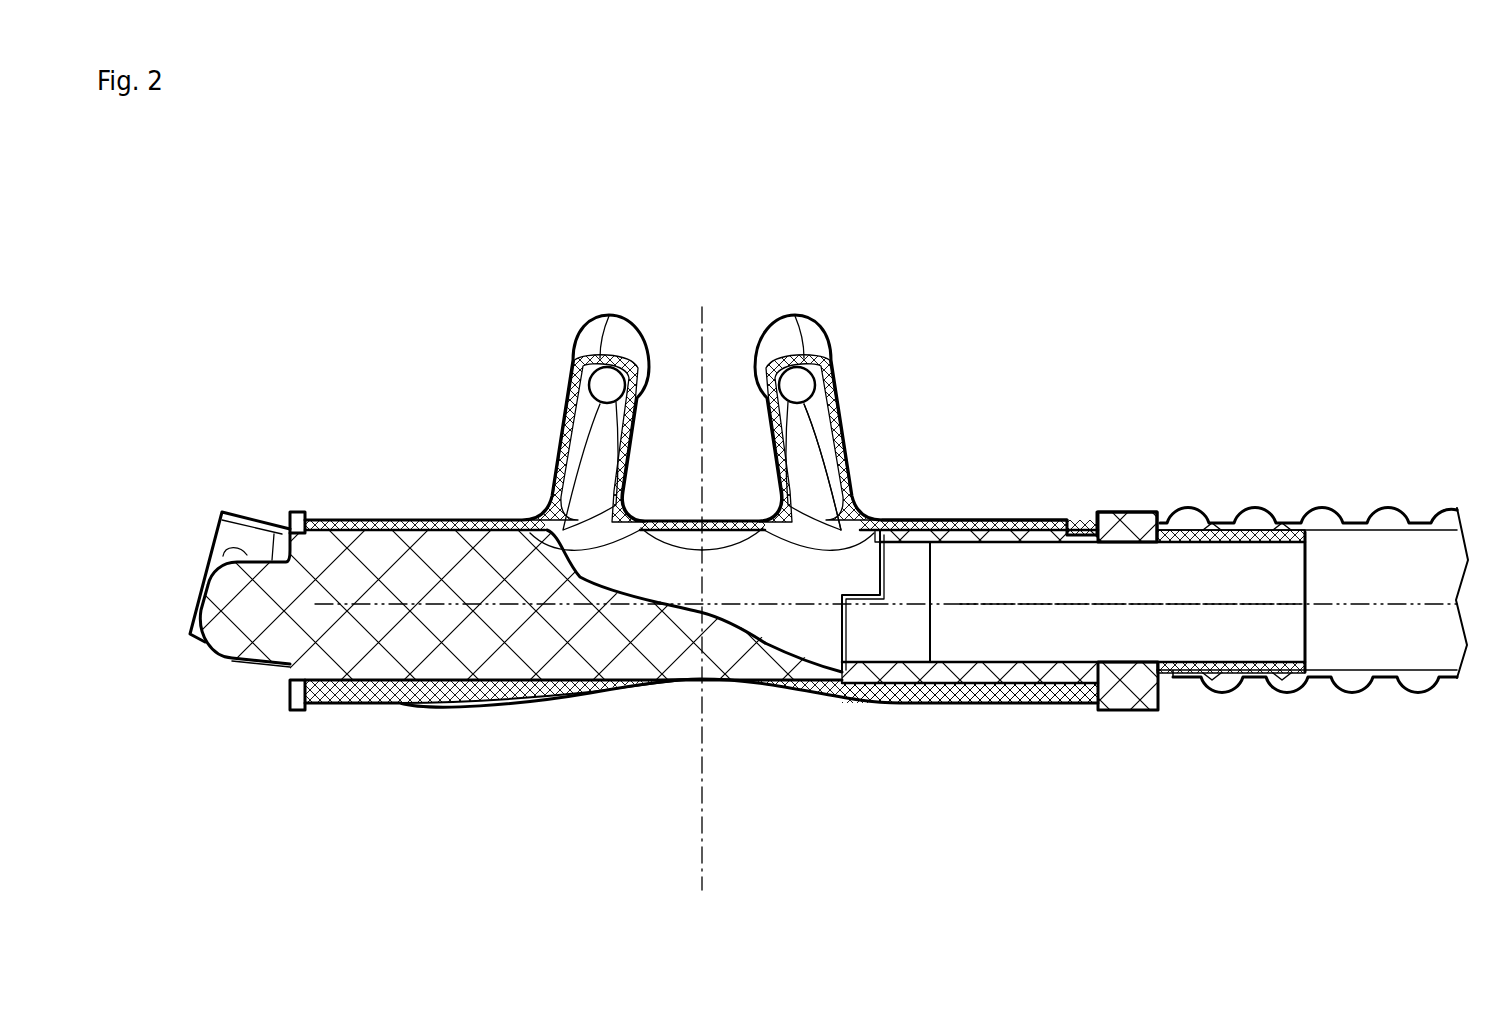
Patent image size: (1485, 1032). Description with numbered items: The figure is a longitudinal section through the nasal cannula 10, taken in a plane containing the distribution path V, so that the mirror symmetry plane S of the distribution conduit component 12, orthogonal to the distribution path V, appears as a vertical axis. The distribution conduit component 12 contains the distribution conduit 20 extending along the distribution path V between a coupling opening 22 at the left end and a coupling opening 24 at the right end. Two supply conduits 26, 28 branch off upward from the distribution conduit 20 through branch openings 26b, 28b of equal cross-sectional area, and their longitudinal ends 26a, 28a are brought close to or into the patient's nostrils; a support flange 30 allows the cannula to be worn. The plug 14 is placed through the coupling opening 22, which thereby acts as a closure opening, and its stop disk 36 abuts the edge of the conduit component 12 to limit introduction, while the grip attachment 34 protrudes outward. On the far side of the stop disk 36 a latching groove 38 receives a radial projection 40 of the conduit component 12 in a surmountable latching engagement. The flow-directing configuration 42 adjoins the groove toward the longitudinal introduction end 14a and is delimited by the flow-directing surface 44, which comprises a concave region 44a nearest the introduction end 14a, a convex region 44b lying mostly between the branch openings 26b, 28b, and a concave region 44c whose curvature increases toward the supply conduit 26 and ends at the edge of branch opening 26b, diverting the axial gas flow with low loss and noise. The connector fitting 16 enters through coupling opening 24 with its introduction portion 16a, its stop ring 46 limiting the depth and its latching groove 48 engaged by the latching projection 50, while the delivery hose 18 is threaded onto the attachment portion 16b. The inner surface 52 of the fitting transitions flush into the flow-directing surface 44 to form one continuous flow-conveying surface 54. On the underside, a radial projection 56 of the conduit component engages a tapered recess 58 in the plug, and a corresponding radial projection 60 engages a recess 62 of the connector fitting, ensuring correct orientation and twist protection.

The nasal cannula 10 is at (855, 534).
The distribution conduit component 12 is at (701, 775).
The plug 14 is at (682, 593).
The longitudinal introduction end 14a is at (836, 686).
The connector fitting 16 is at (1007, 637).
The introduction portion 16a is at (955, 505).
The attachment portion 16b is at (1220, 685).
The delivery hose 18 is at (1392, 706).
The distribution conduit 20 is at (731, 567).
The coupling opening 22 is at (305, 617).
The coupling opening 24 is at (1150, 700).
The supply conduit 26 is at (604, 388).
The longitudinal end 26a is at (629, 312).
The branch opening 26b is at (584, 505).
The supply conduit 28 is at (804, 388).
The longitudinal end 28a is at (768, 325).
The branch opening 28b is at (820, 507).
The support flange 30 is at (240, 594).
The grip attachment 34 is at (224, 630).
The stop disk 36 is at (300, 510).
The latching groove 38 is at (702, 474).
The radial projection 40 is at (330, 520).
The flow-directing configuration 42 is at (521, 584).
The flow-directing surface 44 is at (694, 601).
The concave curvature region 44a is at (807, 665).
The convex curvature region 44b is at (735, 622).
The concave curvature region 44c is at (580, 573).
The stop ring 46 is at (1118, 520).
The latching groove 48 is at (1185, 551).
The latching projection 50 is at (1231, 601).
The inner surface 52 is at (1038, 658).
The flow-conveying surface 54 is at (856, 632).
The radial projection 56 is at (701, 738).
The recess 58 is at (348, 702).
The radial projection 60 is at (970, 736).
The recess 62 is at (1060, 703).
The mirror symmetry plane S is at (700, 343).
The distribution path V is at (1005, 601).